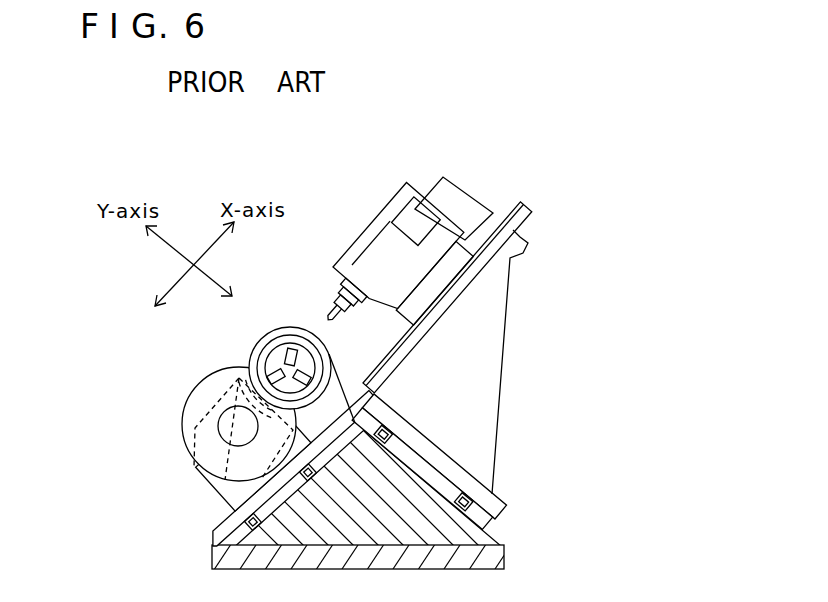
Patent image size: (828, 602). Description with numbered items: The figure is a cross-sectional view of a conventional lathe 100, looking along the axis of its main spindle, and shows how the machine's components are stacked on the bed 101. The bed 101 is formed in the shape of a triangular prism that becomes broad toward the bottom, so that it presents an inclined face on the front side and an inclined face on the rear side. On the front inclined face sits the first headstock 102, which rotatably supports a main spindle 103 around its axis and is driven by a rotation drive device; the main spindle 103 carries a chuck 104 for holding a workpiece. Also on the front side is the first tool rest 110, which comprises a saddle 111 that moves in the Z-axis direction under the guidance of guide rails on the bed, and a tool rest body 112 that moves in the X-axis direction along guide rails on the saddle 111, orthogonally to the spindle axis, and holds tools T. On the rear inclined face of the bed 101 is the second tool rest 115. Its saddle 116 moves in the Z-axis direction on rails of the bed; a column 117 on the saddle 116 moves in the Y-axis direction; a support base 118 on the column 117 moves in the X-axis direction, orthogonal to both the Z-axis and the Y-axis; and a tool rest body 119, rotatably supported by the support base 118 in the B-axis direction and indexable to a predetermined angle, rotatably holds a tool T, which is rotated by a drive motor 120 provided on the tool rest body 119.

The lathe 100 is at (194, 171).
The bed 101 is at (495, 538).
The first headstock 102 is at (212, 537).
The main spindle 103 is at (259, 347).
The chuck 104 is at (286, 345).
The first tool rest 110 is at (158, 436).
The saddle 111 is at (215, 515).
The tool rest body 112 is at (188, 403).
The second tool rest 115 is at (550, 227).
The saddle 116 is at (492, 493).
The column 117 is at (500, 305).
The support base 118 is at (503, 222).
The tool rest body 119 is at (383, 240).
The drive motor 120 is at (408, 216).
The tool T is at (333, 313).